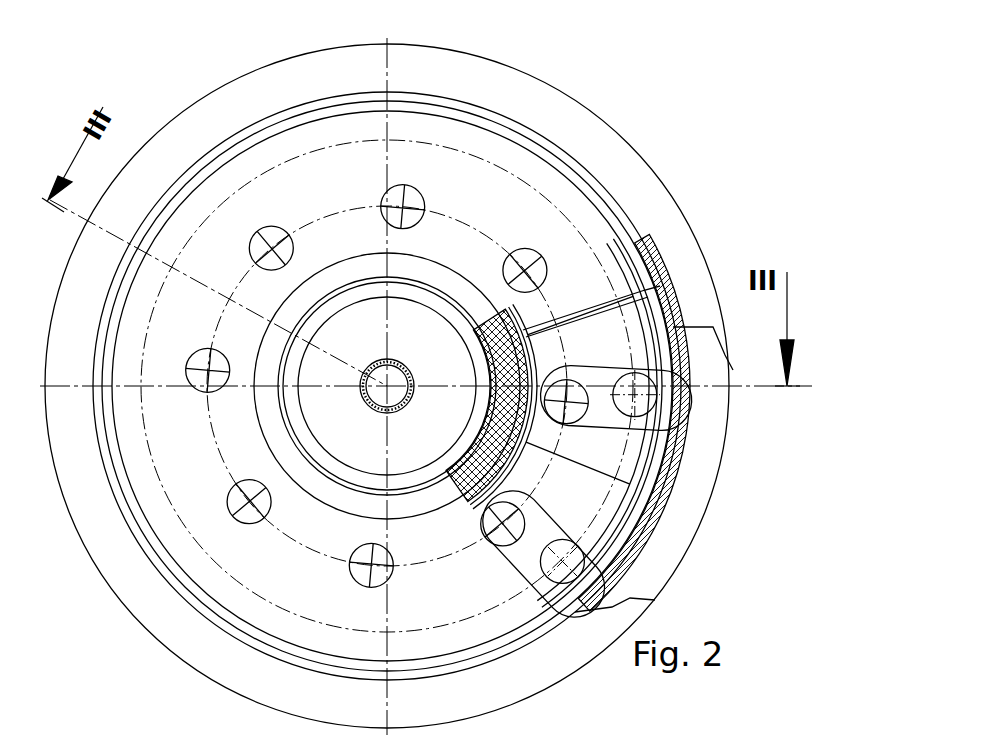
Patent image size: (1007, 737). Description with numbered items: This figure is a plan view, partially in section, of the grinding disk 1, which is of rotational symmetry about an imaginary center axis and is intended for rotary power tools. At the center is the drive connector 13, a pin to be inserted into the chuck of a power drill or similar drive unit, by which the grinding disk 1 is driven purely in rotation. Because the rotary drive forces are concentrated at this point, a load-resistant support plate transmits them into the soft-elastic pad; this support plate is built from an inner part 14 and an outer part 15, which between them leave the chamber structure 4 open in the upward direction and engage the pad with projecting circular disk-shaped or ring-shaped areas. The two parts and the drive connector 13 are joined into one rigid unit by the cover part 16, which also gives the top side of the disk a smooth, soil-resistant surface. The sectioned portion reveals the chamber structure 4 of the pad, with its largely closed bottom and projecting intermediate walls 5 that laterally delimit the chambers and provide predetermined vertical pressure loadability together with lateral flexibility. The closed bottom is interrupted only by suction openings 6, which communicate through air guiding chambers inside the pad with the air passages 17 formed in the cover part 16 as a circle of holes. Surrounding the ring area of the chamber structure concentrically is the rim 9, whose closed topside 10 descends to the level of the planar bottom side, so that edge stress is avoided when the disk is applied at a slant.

The grinding disk 1 is at (640, 70).
The chamber structure 4 is at (628, 524).
The intermediate walls 5 is at (650, 470).
The suction openings 6 is at (688, 403).
The rim 9 is at (172, 631).
The closed topside 10 is at (133, 557).
The drive connector 13 is at (396, 378).
The inner part 14 is at (374, 347).
The outer part 15 is at (690, 398).
The cover part 16 is at (342, 202).
The air passages 17 is at (372, 548).